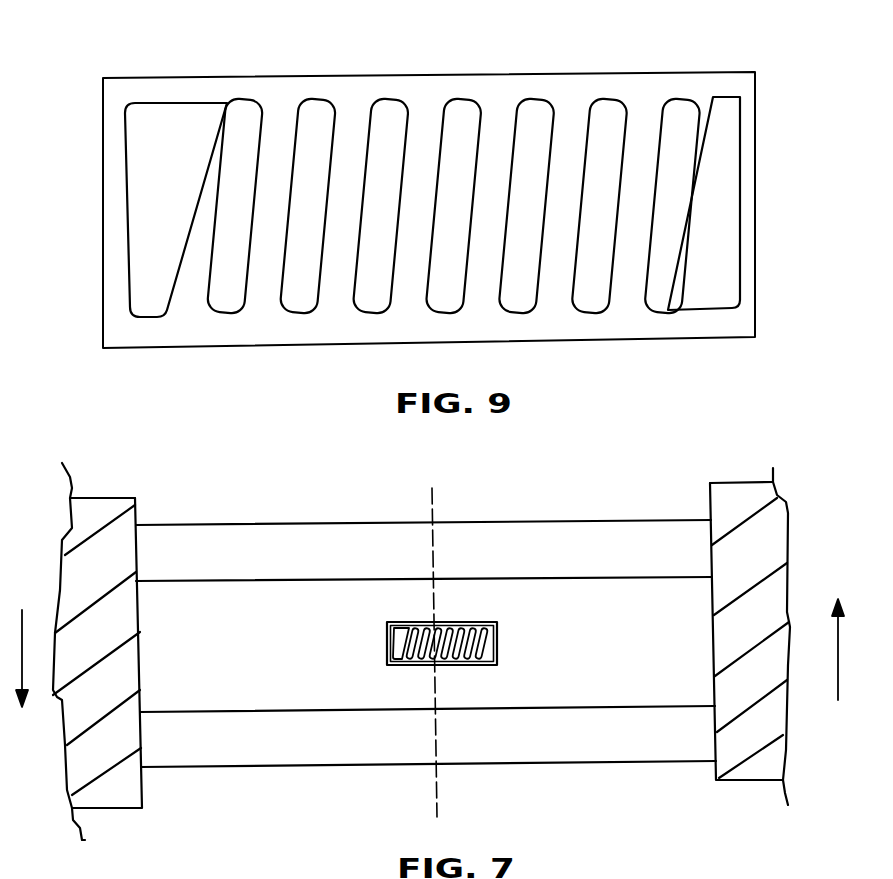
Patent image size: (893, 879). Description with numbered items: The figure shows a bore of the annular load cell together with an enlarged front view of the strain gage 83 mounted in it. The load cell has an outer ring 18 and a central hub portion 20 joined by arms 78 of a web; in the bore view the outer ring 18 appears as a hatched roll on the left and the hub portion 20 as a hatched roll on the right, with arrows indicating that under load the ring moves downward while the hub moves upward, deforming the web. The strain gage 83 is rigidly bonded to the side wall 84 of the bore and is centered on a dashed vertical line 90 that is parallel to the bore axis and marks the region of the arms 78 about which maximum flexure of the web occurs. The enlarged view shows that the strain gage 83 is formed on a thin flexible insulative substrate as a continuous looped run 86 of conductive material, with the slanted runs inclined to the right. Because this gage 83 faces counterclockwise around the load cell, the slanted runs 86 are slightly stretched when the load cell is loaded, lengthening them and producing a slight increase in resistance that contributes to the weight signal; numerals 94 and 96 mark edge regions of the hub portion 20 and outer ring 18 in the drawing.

In FIG. 7, the outer ring 18 is at (98, 806).
In FIG. 7, the central hub portion 20 is at (750, 780).
In FIG. 7, the arms 78 is at (331, 580).
In FIG. 9, the strain gage 83 is at (643, 72).
In FIG. 7, the strain gage 83 is at (497, 637).
In FIG. 7, the side wall 84 is at (319, 677).
In FIG. 9, the looped run 86 is at (540, 101).
In FIG. 7, the looped run 86 is at (454, 618).
In FIG. 7, the vertical line 90 is at (447, 502).
In FIG. 7, the roller end face 94 is at (715, 482).
In FIG. 7, the roller end face 96 is at (137, 517).